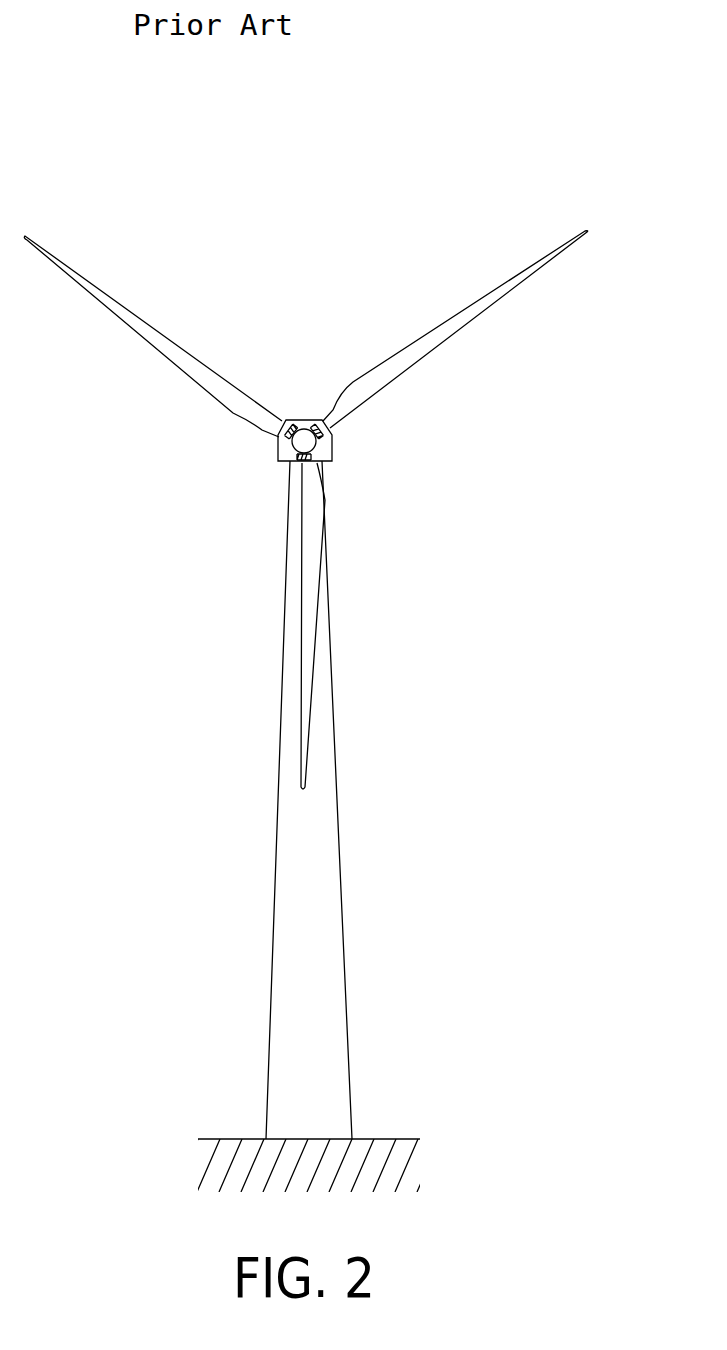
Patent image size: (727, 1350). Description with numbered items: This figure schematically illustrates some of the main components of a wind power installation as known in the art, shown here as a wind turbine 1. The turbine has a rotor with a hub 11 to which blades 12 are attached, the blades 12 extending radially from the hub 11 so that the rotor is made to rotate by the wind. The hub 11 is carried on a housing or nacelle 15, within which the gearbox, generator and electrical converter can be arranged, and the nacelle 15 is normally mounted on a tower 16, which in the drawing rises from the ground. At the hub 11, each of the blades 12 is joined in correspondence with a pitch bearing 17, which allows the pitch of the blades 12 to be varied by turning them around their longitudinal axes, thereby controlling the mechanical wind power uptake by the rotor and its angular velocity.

The wind turbine 1 is at (187, 550).
The hub 11 is at (302, 437).
The blades 12 is at (172, 348).
The nacelle 15 is at (333, 455).
The tower 16 is at (329, 993).
The pitch bearing 17 is at (278, 437).